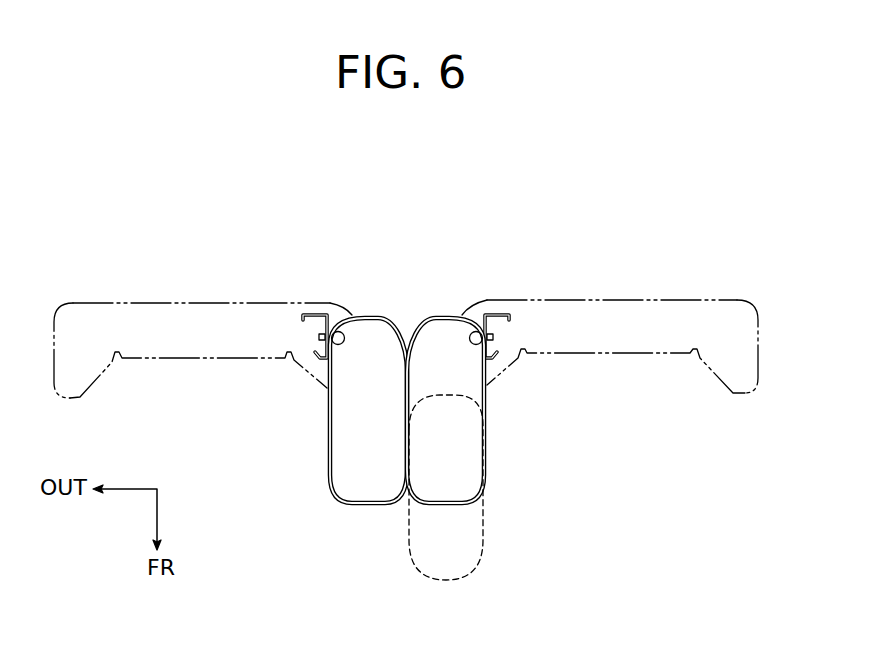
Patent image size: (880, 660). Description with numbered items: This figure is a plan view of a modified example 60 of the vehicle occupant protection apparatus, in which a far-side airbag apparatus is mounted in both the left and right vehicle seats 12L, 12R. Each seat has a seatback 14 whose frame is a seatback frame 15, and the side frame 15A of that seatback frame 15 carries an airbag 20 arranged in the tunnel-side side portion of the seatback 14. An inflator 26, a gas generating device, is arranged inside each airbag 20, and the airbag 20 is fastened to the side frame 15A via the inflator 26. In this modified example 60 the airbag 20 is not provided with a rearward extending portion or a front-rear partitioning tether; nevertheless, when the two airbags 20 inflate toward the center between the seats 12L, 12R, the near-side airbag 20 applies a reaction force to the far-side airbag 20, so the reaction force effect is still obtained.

The modified example 60 is at (450, 236).
The seatback 14 is at (406, 368).
The right vehicle seat 12R is at (180, 362).
The left vehicle seat 12L is at (613, 357).
The side frame 15A is at (417, 303).
The seatback frame 15 is at (316, 312).
The airbag 20 is at (329, 447).
The inflator 26 is at (343, 344).